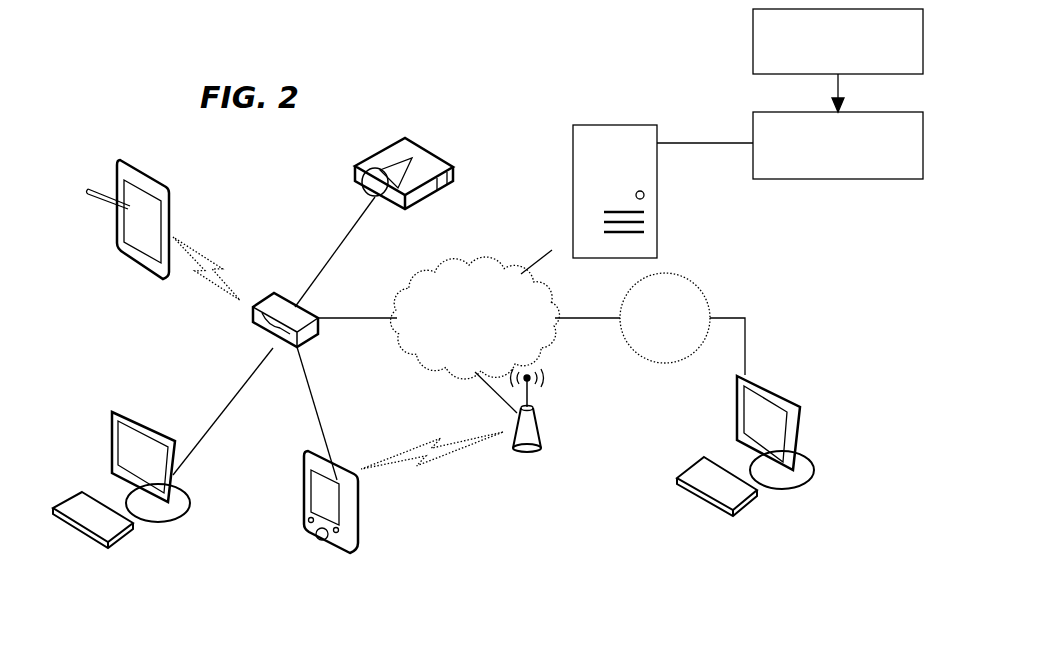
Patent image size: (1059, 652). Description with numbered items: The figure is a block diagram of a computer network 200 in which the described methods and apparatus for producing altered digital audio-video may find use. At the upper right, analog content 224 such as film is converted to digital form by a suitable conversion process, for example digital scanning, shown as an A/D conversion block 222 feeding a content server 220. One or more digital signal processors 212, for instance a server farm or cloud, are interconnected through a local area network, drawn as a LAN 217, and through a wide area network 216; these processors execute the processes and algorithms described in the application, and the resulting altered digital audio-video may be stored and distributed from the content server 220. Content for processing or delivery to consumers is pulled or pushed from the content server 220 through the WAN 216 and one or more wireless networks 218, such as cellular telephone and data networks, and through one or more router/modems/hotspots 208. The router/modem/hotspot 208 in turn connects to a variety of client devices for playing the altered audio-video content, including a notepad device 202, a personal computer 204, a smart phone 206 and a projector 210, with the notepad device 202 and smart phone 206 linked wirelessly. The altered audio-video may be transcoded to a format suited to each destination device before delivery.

The computer network 200 is at (494, 108).
The notepad device 202 is at (158, 180).
The personal computer 204 is at (141, 425).
The smart phone 206 is at (336, 553).
The router/modem/hotspot 208 is at (265, 292).
The projector 210 is at (432, 200).
The digital signal processor 212 is at (762, 393).
The wide area network 216 is at (493, 346).
The LAN 217 is at (683, 350).
The wireless network 218 is at (532, 408).
The content server 220 is at (657, 186).
The A/D conversion 222 is at (815, 180).
The analog content 224 is at (753, 37).